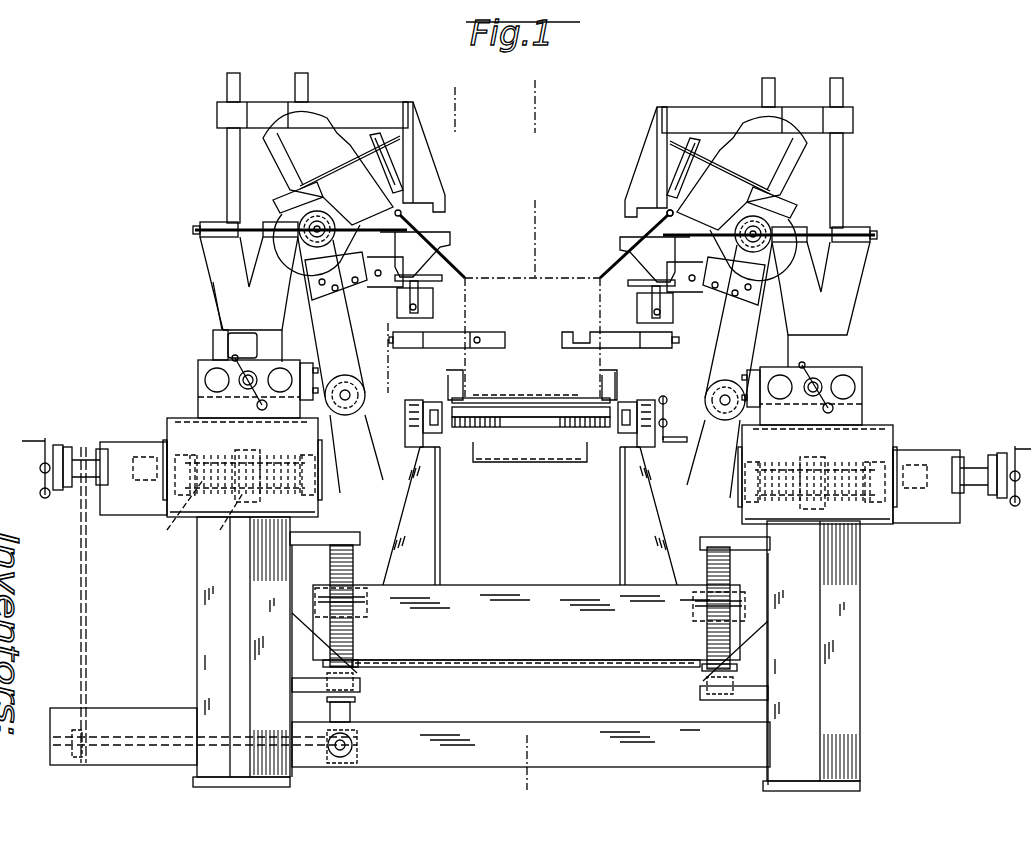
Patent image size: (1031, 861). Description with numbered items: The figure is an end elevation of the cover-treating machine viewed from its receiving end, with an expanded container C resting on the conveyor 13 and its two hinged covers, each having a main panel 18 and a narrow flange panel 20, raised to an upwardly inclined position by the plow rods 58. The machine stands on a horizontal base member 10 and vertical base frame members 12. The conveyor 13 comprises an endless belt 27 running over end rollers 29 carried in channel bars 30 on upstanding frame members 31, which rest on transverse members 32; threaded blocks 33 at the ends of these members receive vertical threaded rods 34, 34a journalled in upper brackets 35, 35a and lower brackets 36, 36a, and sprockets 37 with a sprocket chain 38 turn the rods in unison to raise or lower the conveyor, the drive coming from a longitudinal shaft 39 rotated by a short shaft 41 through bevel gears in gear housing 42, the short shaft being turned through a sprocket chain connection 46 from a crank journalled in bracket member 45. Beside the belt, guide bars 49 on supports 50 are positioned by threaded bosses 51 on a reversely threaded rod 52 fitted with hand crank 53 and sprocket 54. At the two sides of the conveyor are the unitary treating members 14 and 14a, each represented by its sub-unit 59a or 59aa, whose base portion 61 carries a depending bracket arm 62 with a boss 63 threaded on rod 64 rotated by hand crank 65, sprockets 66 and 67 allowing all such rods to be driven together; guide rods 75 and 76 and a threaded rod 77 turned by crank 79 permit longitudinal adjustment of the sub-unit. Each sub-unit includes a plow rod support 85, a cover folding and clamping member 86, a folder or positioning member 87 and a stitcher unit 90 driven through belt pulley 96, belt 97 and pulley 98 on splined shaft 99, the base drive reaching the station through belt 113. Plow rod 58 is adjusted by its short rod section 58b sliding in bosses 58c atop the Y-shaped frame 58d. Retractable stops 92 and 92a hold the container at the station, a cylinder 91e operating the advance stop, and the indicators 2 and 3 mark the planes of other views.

The section line 2- 2 is at (536, 88).
The section line 3- 3 is at (456, 108).
The horizontal base member 10 is at (608, 728).
The vertical base frame member 12 is at (210, 642).
The conveyor 13 is at (547, 468).
The unitary treating member 14 is at (205, 103).
The unitary treating member 14a is at (876, 135).
The main panel 18 is at (640, 247).
The narrow panel 20 is at (660, 224).
The endless belt 27 is at (505, 463).
The end roller 29 is at (563, 399).
The channel bar 30 is at (445, 450).
The upstanding frame member 31 is at (442, 568).
The transverse member 32 is at (507, 616).
The interiorly threaded block 33 is at (372, 610).
The threaded rod 34 is at (330, 560).
The threaded rod 34a is at (703, 577).
The upper bracket 35 is at (360, 540).
The upper bracket 35a is at (741, 543).
The lower bracket 36 is at (296, 661).
The lower bracket 36a is at (742, 691).
The sprocket 37 is at (358, 672).
The sprocket chain 38 is at (474, 668).
The horizontal shaft 39 is at (354, 745).
The short shaft 41 is at (155, 735).
The gear housing 42 is at (330, 725).
The bracket member 45 is at (135, 437).
The sprocket chain connection 46 is at (87, 591).
The guide bar 49 is at (616, 371).
The vertically extending support 50 is at (620, 385).
The interiorly threaded boss 51 is at (620, 450).
The reversely threaded rod 52 is at (545, 420).
The hand crank 53 is at (675, 443).
The sprocket 54 is at (410, 441).
The plow rod 58 is at (412, 230).
The short rod section 58b is at (250, 222).
The boss 58c is at (199, 216).
The frame 58d is at (222, 272).
The sub-unit 59a is at (270, 72).
The sub-unit 59aa is at (742, 74).
The base portion 61 is at (199, 406).
The depending bracket arm 62 is at (228, 437).
The boss 63 is at (215, 647).
The threaded rod 64 is at (148, 549).
The hand crank 65 is at (40, 440).
The sprocket 66 is at (107, 483).
The sprocket 67 is at (953, 491).
The guide rod 75 is at (210, 371).
The guide rod 76 is at (283, 368).
The threaded rod 77 is at (239, 383).
The crank 79 is at (232, 353).
The plow rod support 85 is at (199, 250).
The cover folding and clamping member 86 is at (440, 168).
The folder or positioning member 87 is at (406, 251).
The stitcher unit 90 is at (333, 118).
The cylinder 91e is at (245, 333).
The retractable stop 92 is at (484, 330).
The retractable stop 92a is at (576, 330).
The belt pulley 96 is at (762, 224).
The belt 97 is at (765, 300).
The pulley 98 is at (720, 382).
The shaft 99 is at (345, 405).
The belt 113 is at (385, 482).
The container C is at (532, 298).